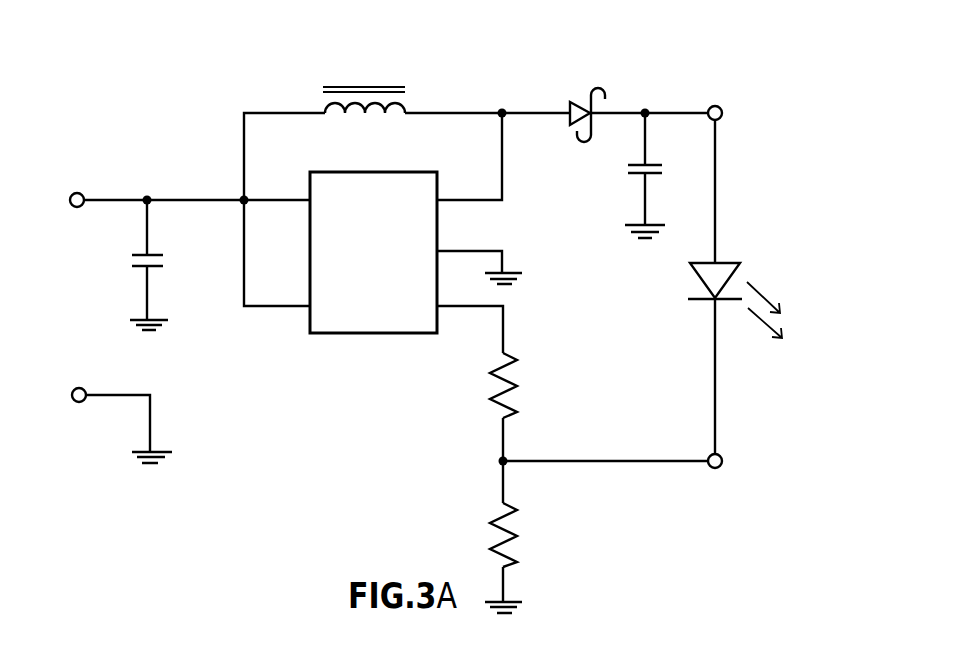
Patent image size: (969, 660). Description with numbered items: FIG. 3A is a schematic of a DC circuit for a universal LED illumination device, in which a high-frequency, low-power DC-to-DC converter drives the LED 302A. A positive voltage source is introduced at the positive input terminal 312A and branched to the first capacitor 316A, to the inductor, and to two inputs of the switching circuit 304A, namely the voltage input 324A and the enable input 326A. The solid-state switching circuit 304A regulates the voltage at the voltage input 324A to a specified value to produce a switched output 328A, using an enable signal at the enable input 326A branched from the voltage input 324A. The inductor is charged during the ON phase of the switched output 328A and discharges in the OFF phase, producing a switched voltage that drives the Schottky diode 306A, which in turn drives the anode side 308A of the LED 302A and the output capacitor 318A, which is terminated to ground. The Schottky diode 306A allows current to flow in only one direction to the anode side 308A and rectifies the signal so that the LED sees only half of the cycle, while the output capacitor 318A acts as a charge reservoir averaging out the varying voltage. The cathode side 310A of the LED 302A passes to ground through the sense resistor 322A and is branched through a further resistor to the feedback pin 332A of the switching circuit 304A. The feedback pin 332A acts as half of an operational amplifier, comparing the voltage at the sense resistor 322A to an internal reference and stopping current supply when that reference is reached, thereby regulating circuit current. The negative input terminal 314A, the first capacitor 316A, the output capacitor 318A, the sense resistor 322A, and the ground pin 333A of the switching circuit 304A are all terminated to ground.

The LED 302A is at (740, 263).
The switching circuit 304A is at (370, 333).
The Schottky diode D1 306A is at (569, 107).
The anode side 308A is at (715, 105).
The cathode side 310A is at (723, 461).
The +Vin terminal 312A is at (77, 193).
The -Vin terminal 314A is at (80, 388).
The capacitor C1 316A is at (157, 268).
The capacitor C3 318A is at (638, 162).
The resistor R4 322A is at (517, 550).
The Vin input 324A is at (332, 187).
The EN input 326A is at (330, 315).
The SW output 328A is at (410, 187).
The FB pin 332A is at (408, 322).
The GND pin 333A is at (421, 242).